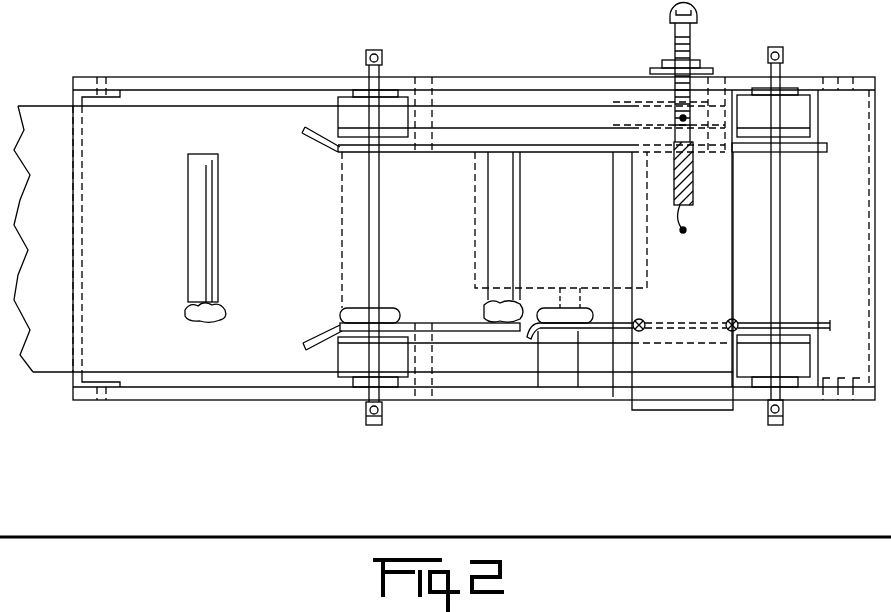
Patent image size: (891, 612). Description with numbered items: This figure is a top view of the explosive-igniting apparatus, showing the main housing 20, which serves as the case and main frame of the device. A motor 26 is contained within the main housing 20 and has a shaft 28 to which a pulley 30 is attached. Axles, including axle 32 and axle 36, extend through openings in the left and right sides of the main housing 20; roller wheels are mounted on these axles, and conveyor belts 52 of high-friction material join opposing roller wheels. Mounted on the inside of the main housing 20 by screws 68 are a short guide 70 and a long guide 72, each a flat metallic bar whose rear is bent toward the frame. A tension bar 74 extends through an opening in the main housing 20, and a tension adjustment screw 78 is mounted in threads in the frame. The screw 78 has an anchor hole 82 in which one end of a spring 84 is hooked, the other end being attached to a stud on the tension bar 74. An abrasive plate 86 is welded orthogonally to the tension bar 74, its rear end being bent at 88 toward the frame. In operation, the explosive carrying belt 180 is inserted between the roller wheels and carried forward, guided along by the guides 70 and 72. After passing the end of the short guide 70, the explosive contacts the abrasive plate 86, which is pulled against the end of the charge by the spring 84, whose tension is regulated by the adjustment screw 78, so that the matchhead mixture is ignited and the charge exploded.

The main housing 20 is at (517, 394).
The motor 26 is at (560, 175).
The shaft 28 is at (563, 304).
The pulley 30 is at (580, 309).
The axle 32 is at (375, 427).
The axle 36 is at (778, 426).
The conveyor belts 52 is at (465, 373).
The screws 68 is at (425, 381).
The short guide 70 is at (320, 346).
The long guide 72 is at (448, 153).
The tension bar 74 is at (697, 404).
The tension adjustment screw 78 is at (690, 42).
The anchor hole 82 is at (683, 118).
The spring 84 is at (690, 203).
The abrasive plate 86 is at (578, 333).
The bent rear end 88 is at (540, 341).
The explosive carrying belt 180 is at (248, 130).